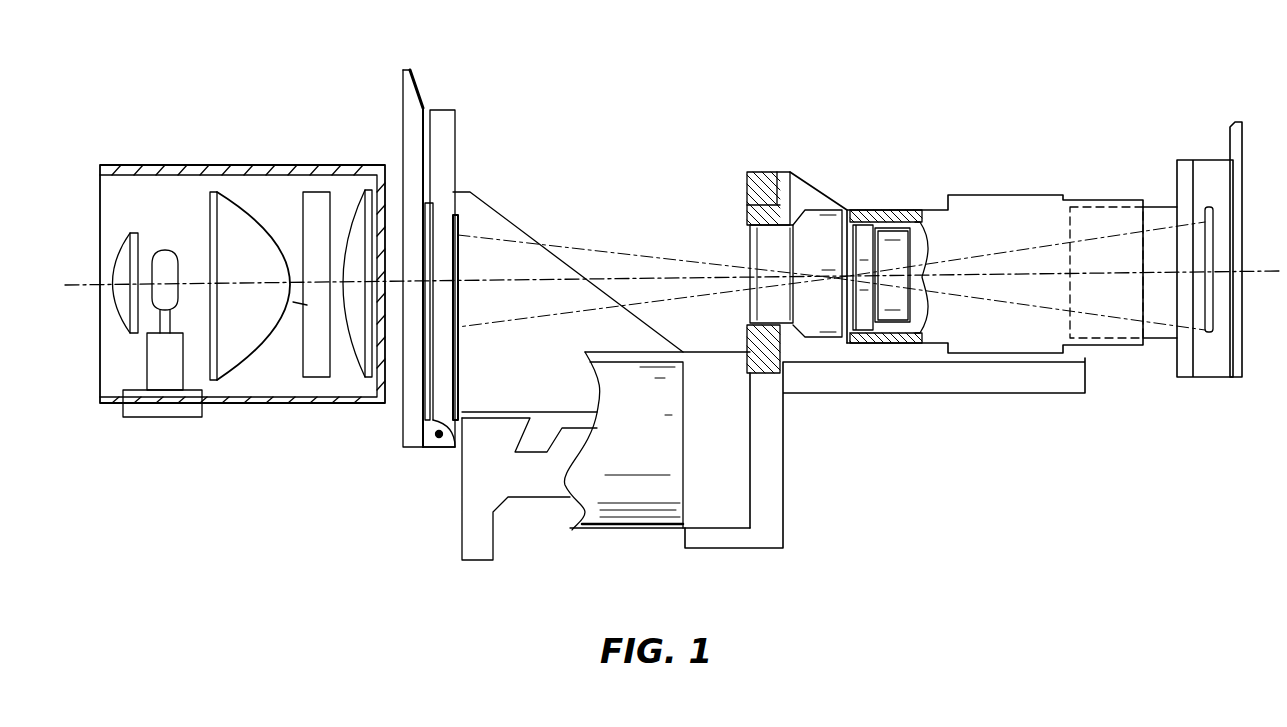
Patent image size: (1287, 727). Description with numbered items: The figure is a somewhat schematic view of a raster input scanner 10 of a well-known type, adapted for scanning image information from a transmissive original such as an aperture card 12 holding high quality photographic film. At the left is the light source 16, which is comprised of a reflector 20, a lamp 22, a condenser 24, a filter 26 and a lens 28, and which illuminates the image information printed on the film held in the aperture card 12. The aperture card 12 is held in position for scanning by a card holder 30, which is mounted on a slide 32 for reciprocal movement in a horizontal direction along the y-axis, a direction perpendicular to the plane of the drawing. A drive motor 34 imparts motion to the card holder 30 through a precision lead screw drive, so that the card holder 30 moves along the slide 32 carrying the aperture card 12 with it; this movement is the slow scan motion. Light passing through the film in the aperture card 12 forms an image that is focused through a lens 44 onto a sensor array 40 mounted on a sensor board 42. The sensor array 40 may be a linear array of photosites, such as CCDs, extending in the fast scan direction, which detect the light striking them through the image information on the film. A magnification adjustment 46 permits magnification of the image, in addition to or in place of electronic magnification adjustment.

The raster input scanner 10 is at (645, 122).
The aperture card 12 is at (427, 197).
The light source 16 is at (305, 112).
The reflector 20 is at (118, 253).
The lamp 22 is at (168, 247).
The condenser 24 is at (243, 208).
The filter 26 is at (320, 377).
The lens 28 is at (367, 377).
The card holder 30 is at (445, 187).
The slide 32 is at (538, 486).
The drive motor 34 is at (660, 528).
The sensor array 40 is at (1210, 207).
The sensor board 42 is at (1238, 122).
The lens 44 is at (825, 205).
The magnification adjustment 46 is at (1103, 200).